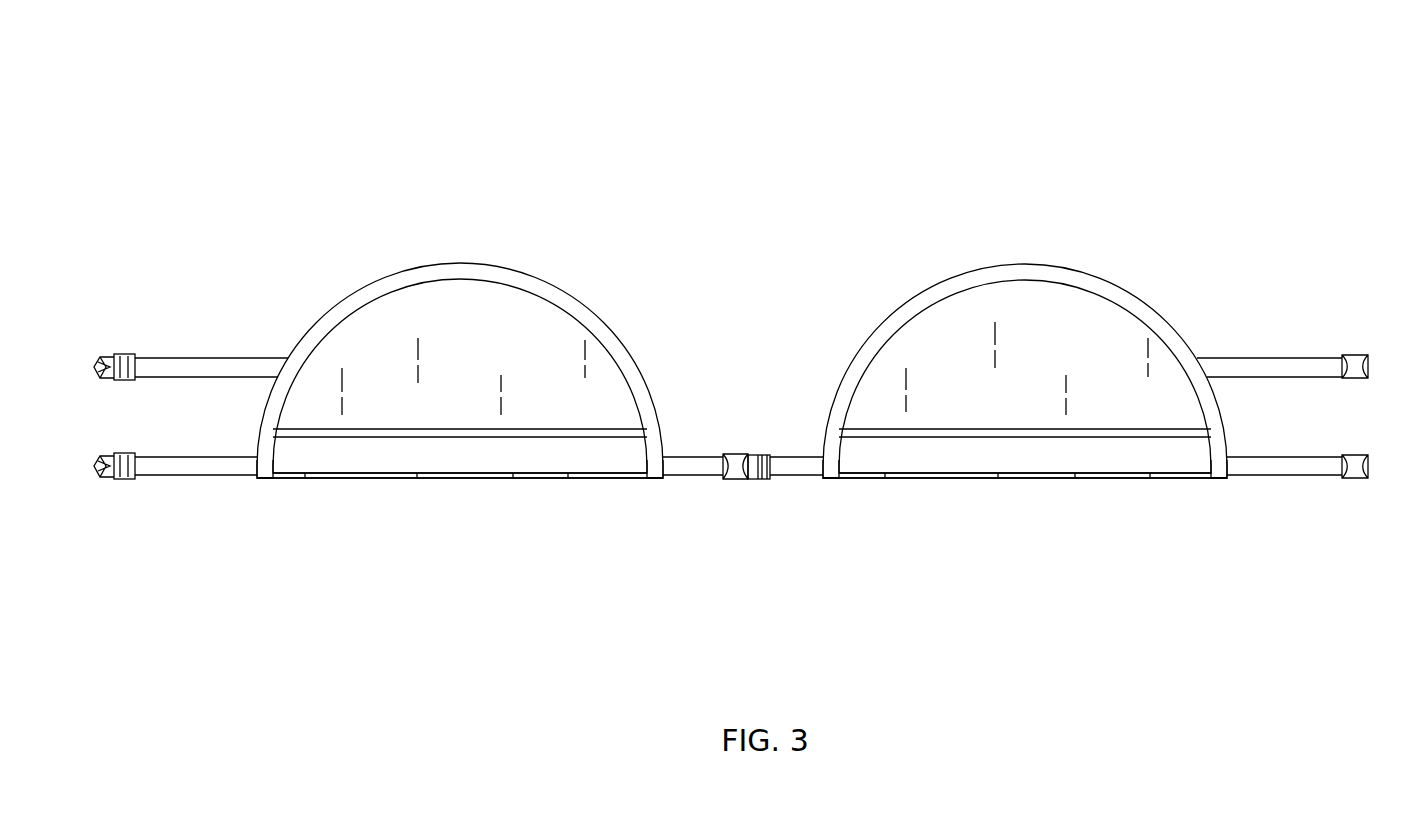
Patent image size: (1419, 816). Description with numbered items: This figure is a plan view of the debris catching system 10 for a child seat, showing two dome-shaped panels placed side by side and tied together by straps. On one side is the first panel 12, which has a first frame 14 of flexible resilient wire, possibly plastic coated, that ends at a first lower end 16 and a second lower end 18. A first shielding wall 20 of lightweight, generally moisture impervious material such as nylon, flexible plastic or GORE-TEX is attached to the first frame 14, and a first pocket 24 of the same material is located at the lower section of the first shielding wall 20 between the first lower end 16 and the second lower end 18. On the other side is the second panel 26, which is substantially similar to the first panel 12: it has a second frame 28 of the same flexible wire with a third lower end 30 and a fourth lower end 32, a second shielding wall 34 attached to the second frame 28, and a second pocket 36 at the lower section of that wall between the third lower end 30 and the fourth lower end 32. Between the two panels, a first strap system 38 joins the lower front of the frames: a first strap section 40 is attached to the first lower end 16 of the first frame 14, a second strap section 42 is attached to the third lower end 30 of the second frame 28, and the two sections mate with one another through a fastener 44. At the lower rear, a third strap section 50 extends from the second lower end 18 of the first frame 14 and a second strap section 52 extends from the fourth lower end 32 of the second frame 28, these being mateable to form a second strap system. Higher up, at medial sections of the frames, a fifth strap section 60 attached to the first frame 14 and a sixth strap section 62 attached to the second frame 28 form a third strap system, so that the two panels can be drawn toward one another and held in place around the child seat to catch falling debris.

The debris catching system 10 is at (944, 114).
The first panel 12 is at (1034, 495).
The first frame 14 is at (1058, 271).
The first lower end 16 is at (827, 480).
The second lower end 18 is at (1227, 480).
The first shielding wall 20 is at (1130, 341).
The first pocket 24 is at (1143, 453).
The second panel 26 is at (418, 495).
The second frame 28 is at (510, 274).
The third lower end 30 is at (667, 485).
The fourth lower end 32 is at (262, 470).
The second shielding wall 34 is at (557, 353).
The second pocket 36 is at (521, 455).
The first strap system 38 is at (706, 432).
The first strap section 40 is at (787, 469).
The second strap section 42 is at (693, 477).
The fastener 44 is at (740, 457).
The third strap section 50 is at (1292, 467).
The second strap section 52 is at (167, 478).
The fifth strap section 60 is at (1265, 357).
The sixth strap section 62 is at (188, 358).